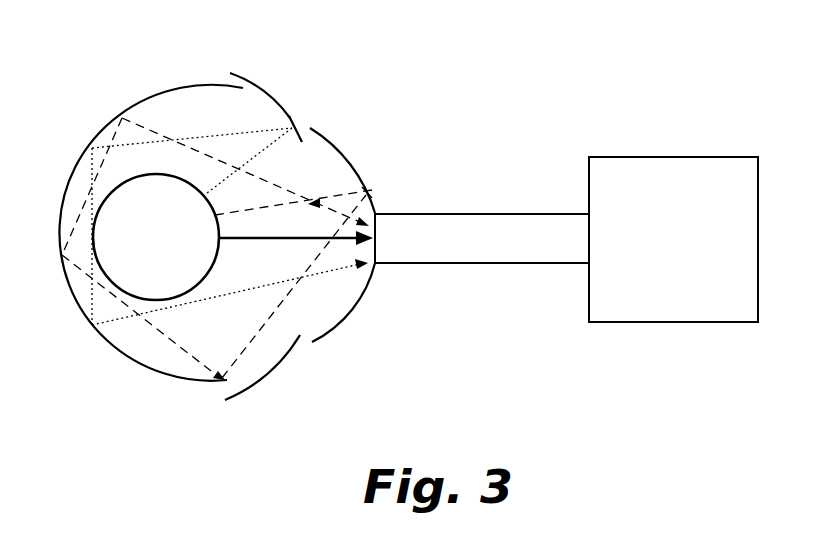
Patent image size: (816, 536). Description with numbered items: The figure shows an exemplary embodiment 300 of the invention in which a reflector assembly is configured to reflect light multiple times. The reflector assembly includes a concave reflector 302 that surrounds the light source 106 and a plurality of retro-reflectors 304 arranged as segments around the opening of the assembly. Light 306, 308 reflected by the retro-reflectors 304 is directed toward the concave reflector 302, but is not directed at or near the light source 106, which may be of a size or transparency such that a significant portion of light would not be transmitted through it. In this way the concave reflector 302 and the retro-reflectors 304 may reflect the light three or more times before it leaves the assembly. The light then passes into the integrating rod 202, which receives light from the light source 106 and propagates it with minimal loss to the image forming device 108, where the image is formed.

The exemplary embodiment 300 is at (141, 47).
The concave reflector 302 is at (140, 108).
The retro-reflectors 304 is at (267, 95).
The light 306 is at (366, 192).
The light 308 is at (300, 110).
The light source 106 is at (173, 273).
The integrating rod 202 is at (575, 248).
The image forming device 108 is at (692, 275).